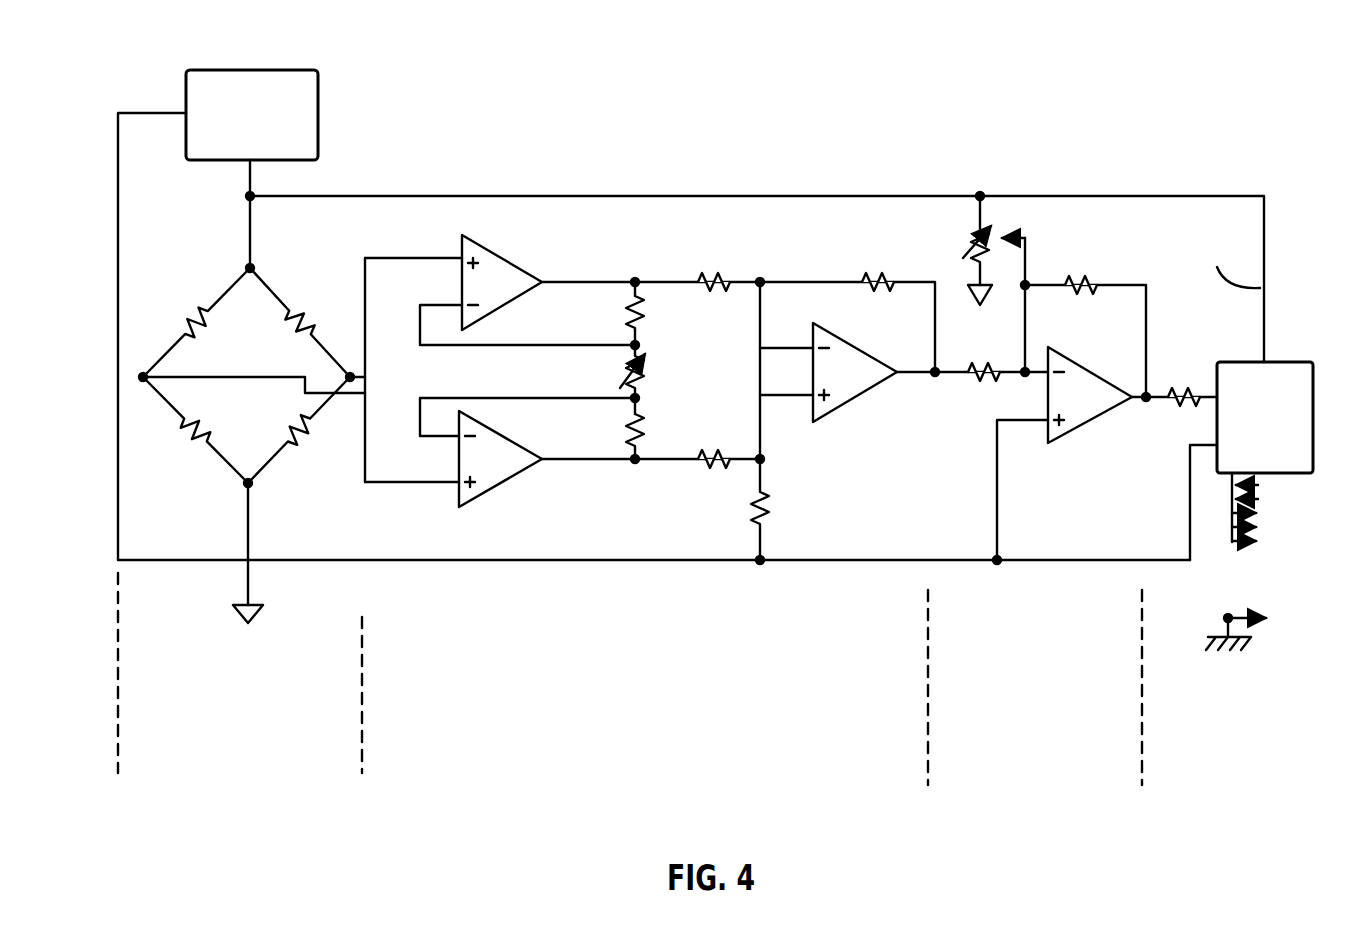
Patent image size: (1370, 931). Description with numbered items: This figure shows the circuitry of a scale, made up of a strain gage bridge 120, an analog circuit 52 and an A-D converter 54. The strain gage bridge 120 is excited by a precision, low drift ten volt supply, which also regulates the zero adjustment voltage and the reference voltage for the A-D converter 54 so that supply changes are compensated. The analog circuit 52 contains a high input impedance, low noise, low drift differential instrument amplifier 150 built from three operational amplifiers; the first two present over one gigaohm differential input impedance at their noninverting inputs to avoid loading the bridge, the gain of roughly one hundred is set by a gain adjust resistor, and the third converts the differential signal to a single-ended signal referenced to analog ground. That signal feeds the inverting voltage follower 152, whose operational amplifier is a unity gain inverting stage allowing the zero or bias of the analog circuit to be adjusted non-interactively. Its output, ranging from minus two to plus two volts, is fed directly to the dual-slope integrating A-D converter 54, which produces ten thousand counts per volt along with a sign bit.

The strain gage bridge 120 is at (362, 776).
The analog circuit 52 is at (783, 478).
The differential instrument amplifier 150 is at (350, 175).
The inverting voltage follower 152 is at (938, 175).
The A-D converter 54 is at (1353, 776).